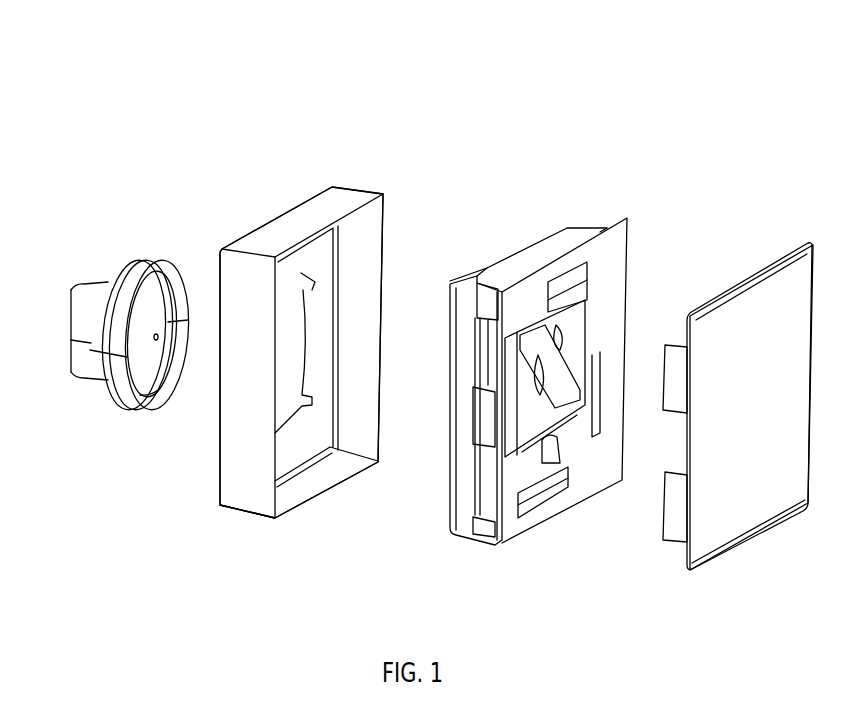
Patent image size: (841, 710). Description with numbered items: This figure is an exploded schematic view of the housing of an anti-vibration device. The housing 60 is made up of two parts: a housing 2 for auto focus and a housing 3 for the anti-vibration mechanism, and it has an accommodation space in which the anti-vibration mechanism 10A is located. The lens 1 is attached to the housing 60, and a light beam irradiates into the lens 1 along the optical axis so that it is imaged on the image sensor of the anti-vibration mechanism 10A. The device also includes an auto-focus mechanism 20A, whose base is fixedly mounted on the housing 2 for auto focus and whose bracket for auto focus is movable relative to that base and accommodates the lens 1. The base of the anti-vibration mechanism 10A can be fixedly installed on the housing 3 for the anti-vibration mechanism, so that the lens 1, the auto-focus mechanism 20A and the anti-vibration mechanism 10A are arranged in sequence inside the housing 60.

The lens 1 is at (108, 286).
The housing for auto focus 2 is at (378, 196).
The housing for the anti-vibration mechanism 3 is at (787, 298).
The housing 60 is at (713, 97).
The auto-focus mechanism 20A is at (455, 472).
The anti-vibration mechanism 10A is at (593, 473).